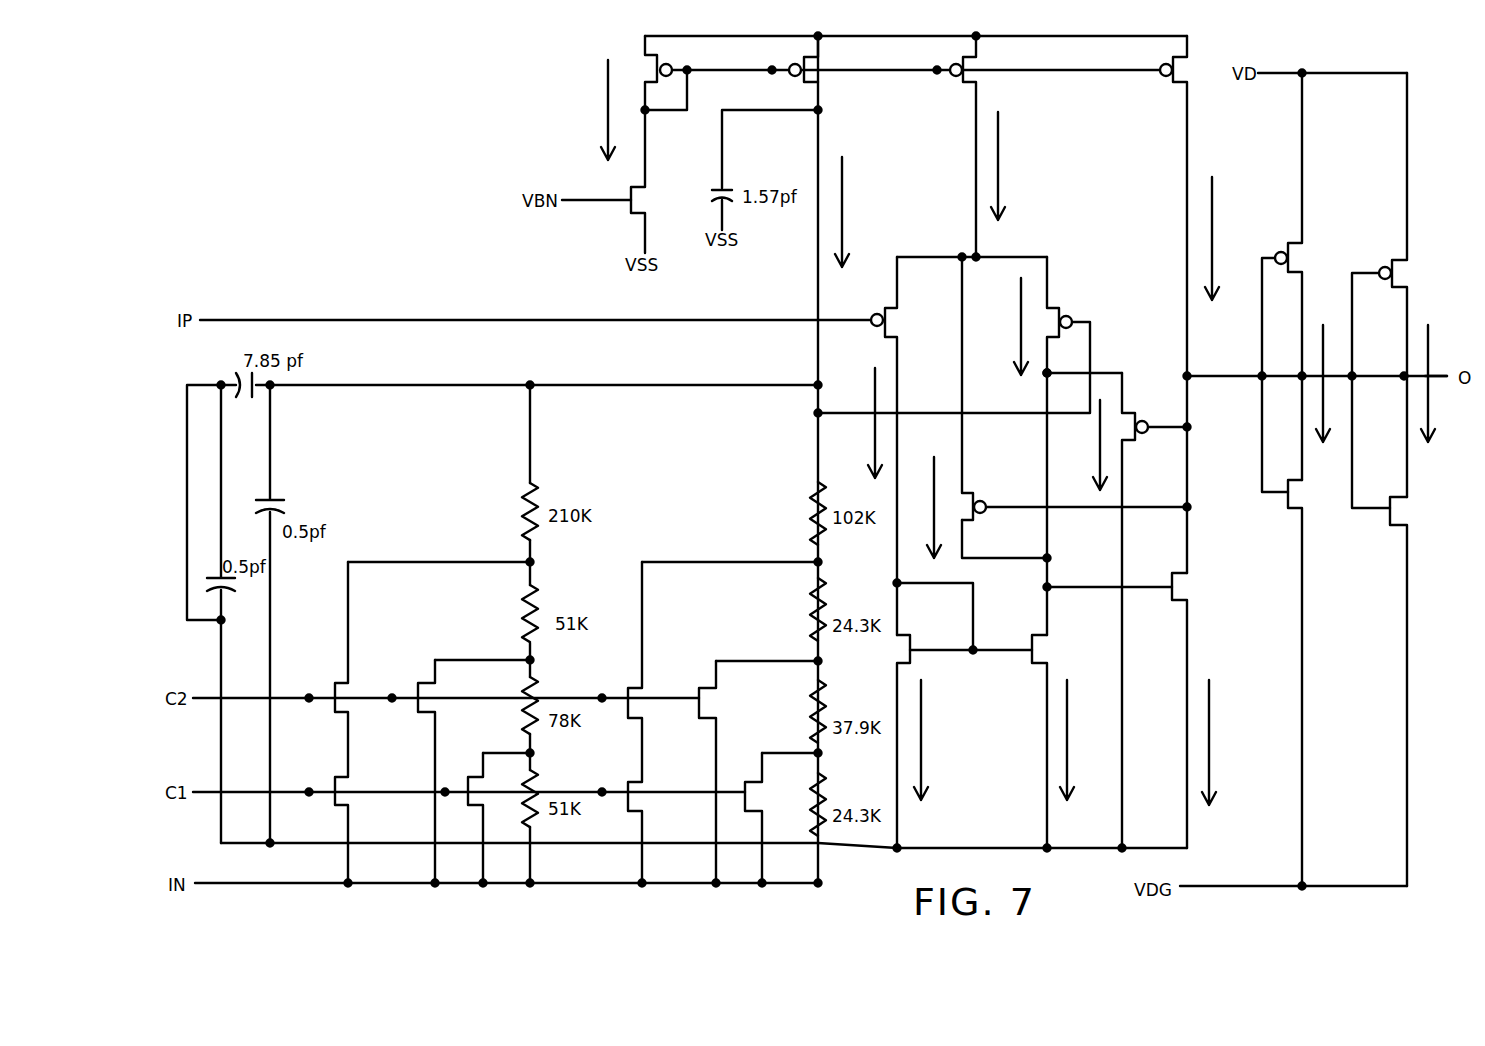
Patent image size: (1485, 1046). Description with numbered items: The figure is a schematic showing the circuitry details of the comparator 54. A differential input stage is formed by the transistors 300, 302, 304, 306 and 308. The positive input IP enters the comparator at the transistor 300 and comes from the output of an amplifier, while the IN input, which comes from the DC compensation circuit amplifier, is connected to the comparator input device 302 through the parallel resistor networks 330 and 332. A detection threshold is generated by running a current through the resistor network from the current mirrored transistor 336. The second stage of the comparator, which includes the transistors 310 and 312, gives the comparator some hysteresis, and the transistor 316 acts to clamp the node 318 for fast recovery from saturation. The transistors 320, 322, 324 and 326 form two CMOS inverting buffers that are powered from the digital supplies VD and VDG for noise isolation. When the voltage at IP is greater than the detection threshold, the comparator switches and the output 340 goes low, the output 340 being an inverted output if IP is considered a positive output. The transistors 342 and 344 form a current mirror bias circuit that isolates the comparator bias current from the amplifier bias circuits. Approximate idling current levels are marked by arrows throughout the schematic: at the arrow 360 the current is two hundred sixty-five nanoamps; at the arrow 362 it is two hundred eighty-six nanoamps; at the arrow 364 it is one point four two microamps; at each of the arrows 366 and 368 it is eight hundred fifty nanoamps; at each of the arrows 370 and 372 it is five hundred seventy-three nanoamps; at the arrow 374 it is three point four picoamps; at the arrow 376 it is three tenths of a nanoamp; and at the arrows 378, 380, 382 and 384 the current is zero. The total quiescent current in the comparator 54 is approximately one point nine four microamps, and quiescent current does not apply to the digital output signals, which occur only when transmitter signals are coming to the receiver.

The comparator 54 is at (459, 241).
The transistor 300 is at (877, 312).
The comparator input device 302 is at (1063, 303).
The transistor 304 is at (912, 657).
The transistor 306 is at (1037, 653).
The transistor 308 is at (967, 80).
The transistor 310 is at (1178, 597).
The transistor 312 is at (1173, 55).
The transistor 316 is at (1137, 410).
The node 318 is at (1043, 375).
The transistor 320 is at (1287, 498).
The transistor 322 is at (1277, 253).
The transistor 324 is at (1390, 517).
The transistor 326 is at (1388, 262).
The parallel resistor network 330 is at (569, 582).
The parallel resistor network 332 is at (792, 583).
The current mirrored transistor 336 is at (812, 60).
The output 340 is at (1440, 377).
The transistor 342 is at (630, 205).
The transistor 344 is at (660, 70).
The arrow 360 is at (606, 82).
The arrow 362 is at (842, 218).
The arrow 364 is at (998, 182).
The arrow 366 is at (877, 407).
The arrow 368 is at (922, 740).
The arrow 370 is at (1020, 340).
The arrow 372 is at (1103, 707).
The arrow 374 is at (1213, 273).
The arrow 376 is at (1245, 708).
The arrow 378 is at (935, 488).
The arrow 380 is at (1100, 467).
The arrow 382 is at (1322, 345).
The arrow 384 is at (1427, 348).